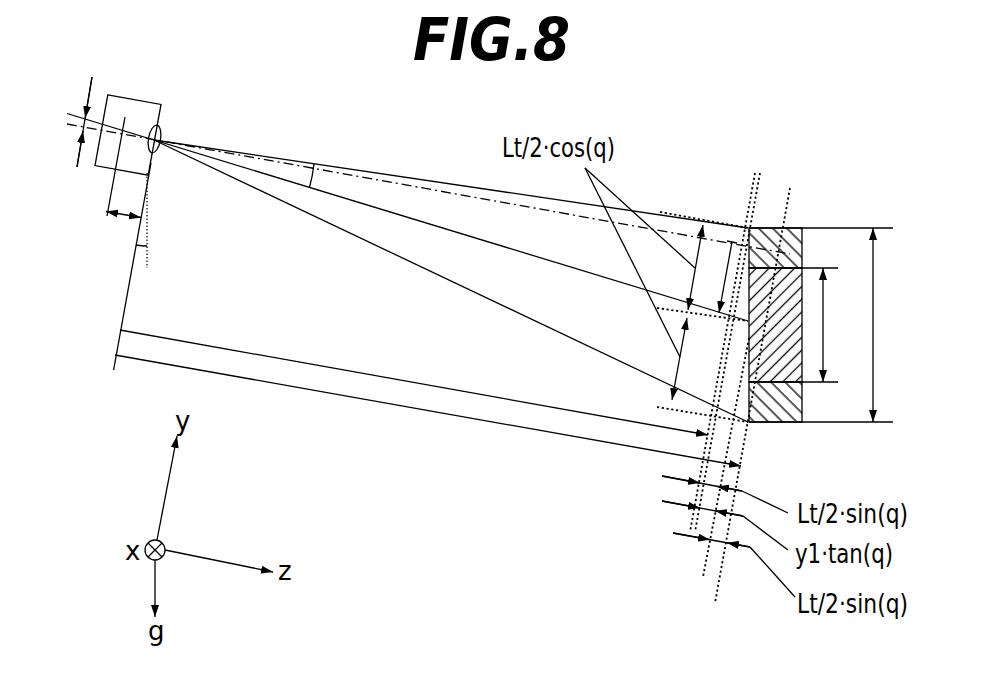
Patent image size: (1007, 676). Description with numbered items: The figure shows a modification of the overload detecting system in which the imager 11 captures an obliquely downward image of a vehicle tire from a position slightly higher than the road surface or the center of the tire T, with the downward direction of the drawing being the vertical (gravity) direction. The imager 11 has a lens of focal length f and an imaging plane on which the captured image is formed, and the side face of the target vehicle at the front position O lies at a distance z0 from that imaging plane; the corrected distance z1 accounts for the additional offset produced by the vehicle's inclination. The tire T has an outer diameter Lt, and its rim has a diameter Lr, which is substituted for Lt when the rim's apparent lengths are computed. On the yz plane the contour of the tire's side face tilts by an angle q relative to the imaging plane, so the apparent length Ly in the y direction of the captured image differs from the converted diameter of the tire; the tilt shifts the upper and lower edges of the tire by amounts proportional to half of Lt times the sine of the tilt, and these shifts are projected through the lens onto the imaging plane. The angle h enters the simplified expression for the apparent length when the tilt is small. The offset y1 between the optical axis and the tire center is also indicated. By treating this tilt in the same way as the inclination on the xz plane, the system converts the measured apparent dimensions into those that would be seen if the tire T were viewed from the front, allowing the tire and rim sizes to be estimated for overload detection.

The imager 11 is at (140, 100).
The tire T is at (792, 235).
The diameter of the tire Lt is at (828, 325).
The diameter of the rim Lr is at (802, 325).
The distance from the imaging plane z0 is at (414, 382).
The corrected distance z1 is at (428, 410).
The focal length f is at (123, 234).
The tilt angle q is at (137, 249).
The angle h is at (312, 186).
The apparent length in the y direction Ly is at (72, 119).
The offset y1 is at (728, 243).
The front position O is at (745, 228).